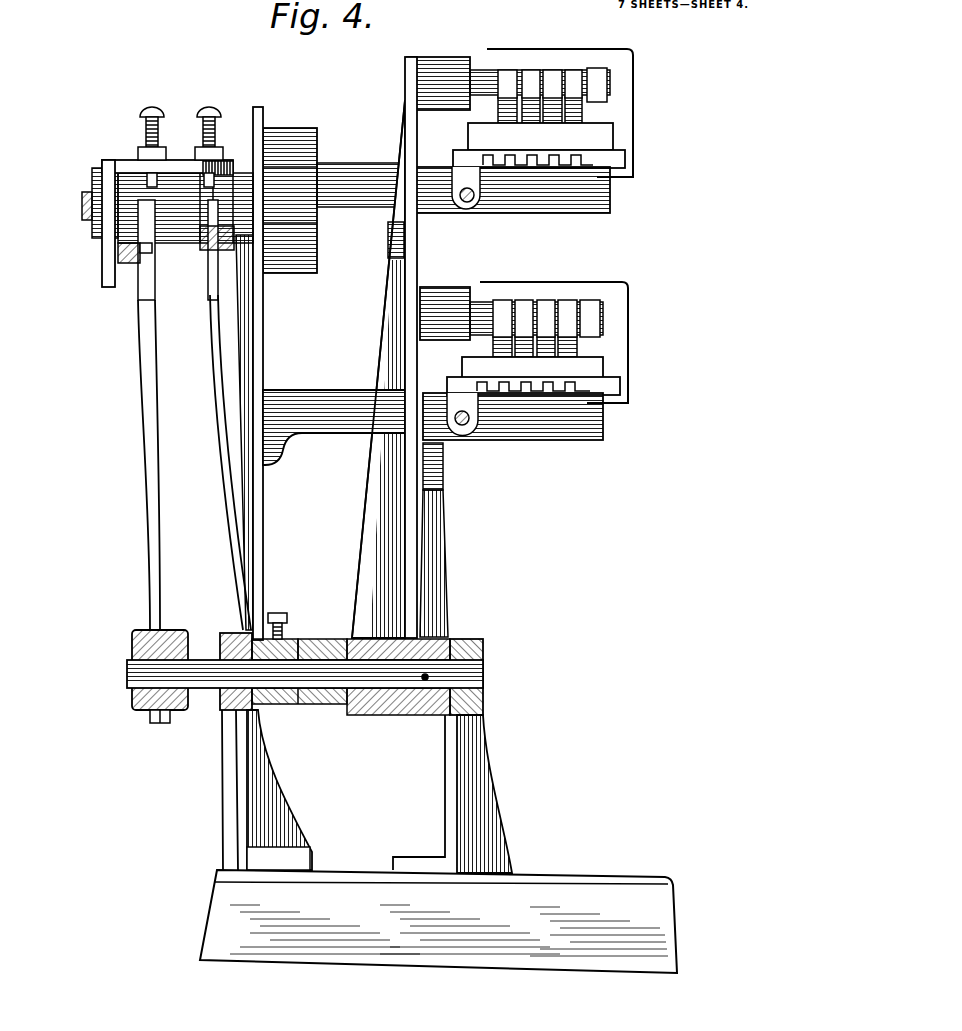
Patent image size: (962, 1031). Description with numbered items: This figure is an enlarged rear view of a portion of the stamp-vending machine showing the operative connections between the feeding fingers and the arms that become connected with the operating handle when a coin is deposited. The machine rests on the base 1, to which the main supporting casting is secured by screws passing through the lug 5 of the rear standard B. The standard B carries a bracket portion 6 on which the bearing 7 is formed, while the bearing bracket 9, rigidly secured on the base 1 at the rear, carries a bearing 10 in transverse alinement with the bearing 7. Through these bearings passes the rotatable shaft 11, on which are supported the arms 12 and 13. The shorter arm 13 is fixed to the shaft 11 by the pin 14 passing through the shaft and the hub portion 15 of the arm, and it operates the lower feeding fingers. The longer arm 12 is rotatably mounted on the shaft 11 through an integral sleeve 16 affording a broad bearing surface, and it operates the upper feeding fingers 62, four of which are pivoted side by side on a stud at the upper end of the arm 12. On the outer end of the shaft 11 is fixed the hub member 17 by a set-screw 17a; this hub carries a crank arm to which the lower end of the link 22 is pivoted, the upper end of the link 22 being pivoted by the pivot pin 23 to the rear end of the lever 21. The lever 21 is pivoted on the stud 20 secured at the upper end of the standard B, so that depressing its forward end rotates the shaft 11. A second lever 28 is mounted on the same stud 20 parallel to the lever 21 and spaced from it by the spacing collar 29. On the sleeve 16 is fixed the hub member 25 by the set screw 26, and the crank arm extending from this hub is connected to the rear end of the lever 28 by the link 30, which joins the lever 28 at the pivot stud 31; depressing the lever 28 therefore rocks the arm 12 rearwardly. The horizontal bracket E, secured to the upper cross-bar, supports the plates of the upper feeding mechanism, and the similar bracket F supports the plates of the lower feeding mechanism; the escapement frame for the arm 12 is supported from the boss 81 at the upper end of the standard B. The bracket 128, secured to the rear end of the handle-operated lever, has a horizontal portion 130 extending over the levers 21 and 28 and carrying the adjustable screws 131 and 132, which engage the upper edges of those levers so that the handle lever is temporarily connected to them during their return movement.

The base 1 is at (215, 907).
The lug 5 is at (305, 846).
The bracket portion 6 is at (236, 796).
The bearing 7 is at (225, 708).
The bearing bracket 9 is at (488, 806).
The bearing 10 is at (484, 646).
The rotatable shaft 11 is at (133, 671).
The arm 12 is at (372, 508).
The arm 13 is at (438, 531).
The pin 14 is at (428, 675).
The hub portion 15 is at (430, 718).
The sleeve 16 is at (321, 706).
The hub member 17 is at (135, 712).
The set-screw 17a is at (160, 726).
The stud 20 is at (82, 197).
The lever 21 is at (145, 272).
The link 22 is at (143, 447).
The pivot pin 23 is at (146, 250).
The hub member 25 is at (294, 640).
The set screw 26 is at (283, 612).
The lever 28 is at (210, 270).
The spacing collar 29 is at (183, 236).
The link 30 is at (212, 378).
The pivot stud 31 is at (228, 250).
The feeding fingers 62 is at (596, 71).
The boss 81 is at (282, 172).
The bracket 128 is at (123, 253).
The horizontal portion 130 is at (127, 162).
The adjustable screw 131 is at (190, 86).
The adjustable screw 132 is at (262, 86).
The rear standard B is at (255, 320).
The horizontal bracket E is at (353, 164).
The bracket F is at (300, 390).